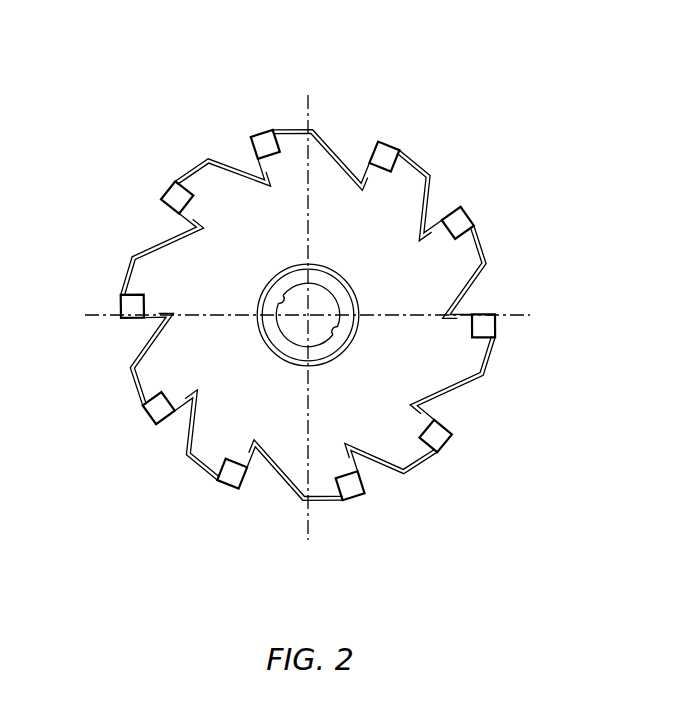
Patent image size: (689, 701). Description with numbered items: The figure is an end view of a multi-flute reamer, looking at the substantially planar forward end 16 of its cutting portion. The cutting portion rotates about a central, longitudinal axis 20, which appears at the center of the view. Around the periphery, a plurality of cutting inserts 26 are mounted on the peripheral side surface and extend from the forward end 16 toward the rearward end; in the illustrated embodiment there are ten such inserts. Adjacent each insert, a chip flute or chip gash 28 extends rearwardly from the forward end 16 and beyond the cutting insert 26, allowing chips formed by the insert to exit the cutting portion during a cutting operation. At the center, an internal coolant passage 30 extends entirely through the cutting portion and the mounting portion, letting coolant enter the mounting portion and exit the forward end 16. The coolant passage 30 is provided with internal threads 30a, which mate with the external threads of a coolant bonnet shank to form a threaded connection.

The forward end 16 is at (304, 312).
The central longitudinal axis 20 is at (316, 314).
The cutting insert 26 is at (261, 124).
The chip flute 28 is at (237, 157).
The internal coolant passage 30 is at (331, 331).
The internal threads 30a is at (283, 301).